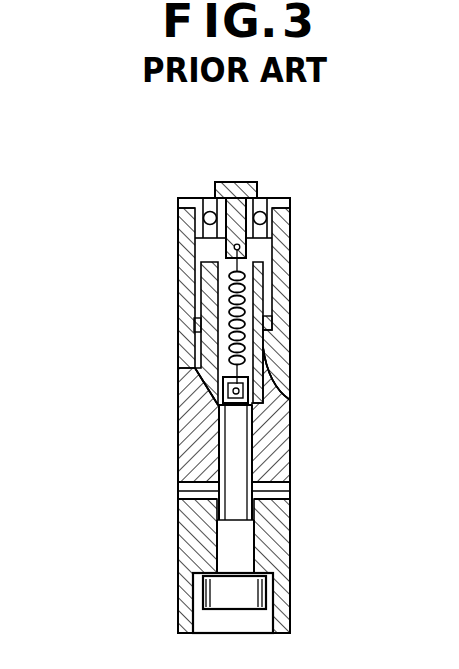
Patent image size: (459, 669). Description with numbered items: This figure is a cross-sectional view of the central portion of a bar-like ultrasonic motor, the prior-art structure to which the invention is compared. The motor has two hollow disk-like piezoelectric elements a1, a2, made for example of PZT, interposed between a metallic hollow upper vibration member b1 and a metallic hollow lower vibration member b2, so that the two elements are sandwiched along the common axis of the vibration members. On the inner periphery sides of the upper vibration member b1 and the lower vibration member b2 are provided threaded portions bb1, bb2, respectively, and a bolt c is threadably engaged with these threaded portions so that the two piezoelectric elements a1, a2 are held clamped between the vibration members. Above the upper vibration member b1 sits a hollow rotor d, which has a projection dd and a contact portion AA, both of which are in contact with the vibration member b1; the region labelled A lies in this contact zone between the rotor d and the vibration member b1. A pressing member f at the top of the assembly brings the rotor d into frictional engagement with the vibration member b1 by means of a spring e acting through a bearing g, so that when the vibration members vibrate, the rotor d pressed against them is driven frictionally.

The pressing member f is at (238, 183).
The bearing g is at (286, 204).
The spring e is at (250, 266).
The hollow rotor d is at (292, 292).
The projection dd is at (198, 323).
The valve seat A is at (266, 352).
The contact portion AA is at (192, 378).
The threaded portion bb1 is at (250, 402).
The upper vibration member b1 is at (282, 440).
The piezoelectric element a1 is at (287, 487).
The piezoelectric element a2 is at (285, 497).
The threaded portion bb2 is at (213, 548).
The lower vibration member b2 is at (282, 556).
The bolt c is at (260, 572).